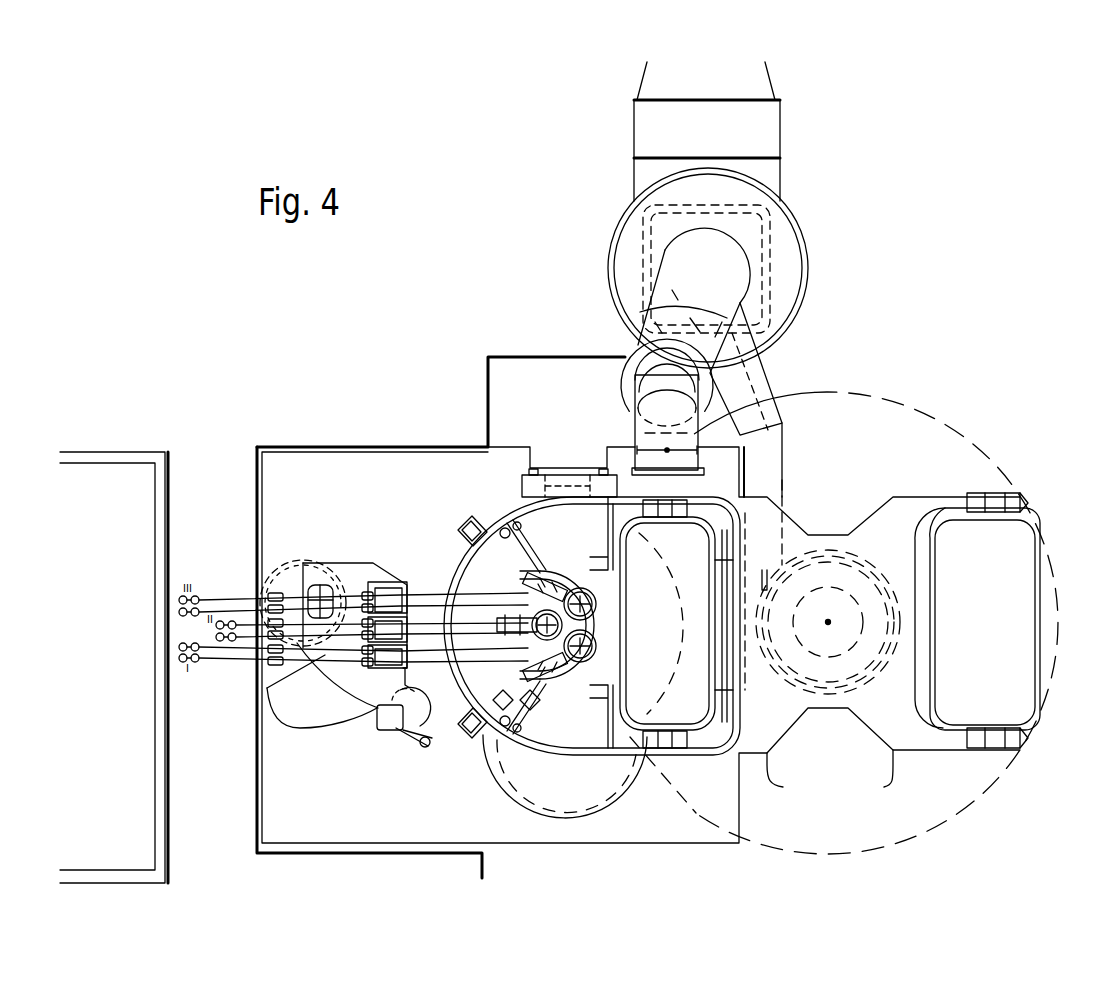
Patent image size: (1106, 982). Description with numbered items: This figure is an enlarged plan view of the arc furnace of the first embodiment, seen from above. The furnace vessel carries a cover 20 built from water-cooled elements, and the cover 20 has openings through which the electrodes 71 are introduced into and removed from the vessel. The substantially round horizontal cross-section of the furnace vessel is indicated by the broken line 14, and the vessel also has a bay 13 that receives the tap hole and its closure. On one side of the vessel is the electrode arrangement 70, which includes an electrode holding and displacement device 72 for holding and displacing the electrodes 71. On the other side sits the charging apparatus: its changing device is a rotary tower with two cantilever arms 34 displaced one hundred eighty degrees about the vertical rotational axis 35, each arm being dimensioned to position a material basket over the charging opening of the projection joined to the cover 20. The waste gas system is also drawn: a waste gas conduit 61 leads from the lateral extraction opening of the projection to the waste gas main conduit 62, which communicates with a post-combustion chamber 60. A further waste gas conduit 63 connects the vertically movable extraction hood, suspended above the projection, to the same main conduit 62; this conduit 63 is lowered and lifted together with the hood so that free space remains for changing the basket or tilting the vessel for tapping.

The bay 13 is at (507, 773).
The broken line 14 is at (669, 613).
The cover 20 is at (584, 731).
The cantilever arms 34 is at (903, 648).
The vertical rotational axis 35 is at (829, 621).
The post-combustion chamber 60 is at (797, 228).
The waste gas conduit 61 is at (773, 469).
The waste gas main conduit 62 is at (687, 267).
The waste gas conduit 63 is at (637, 428).
The electrode arrangement 70 is at (312, 536).
The electrodes 71 is at (580, 588).
The electrode holding and displacement device 72 is at (382, 563).